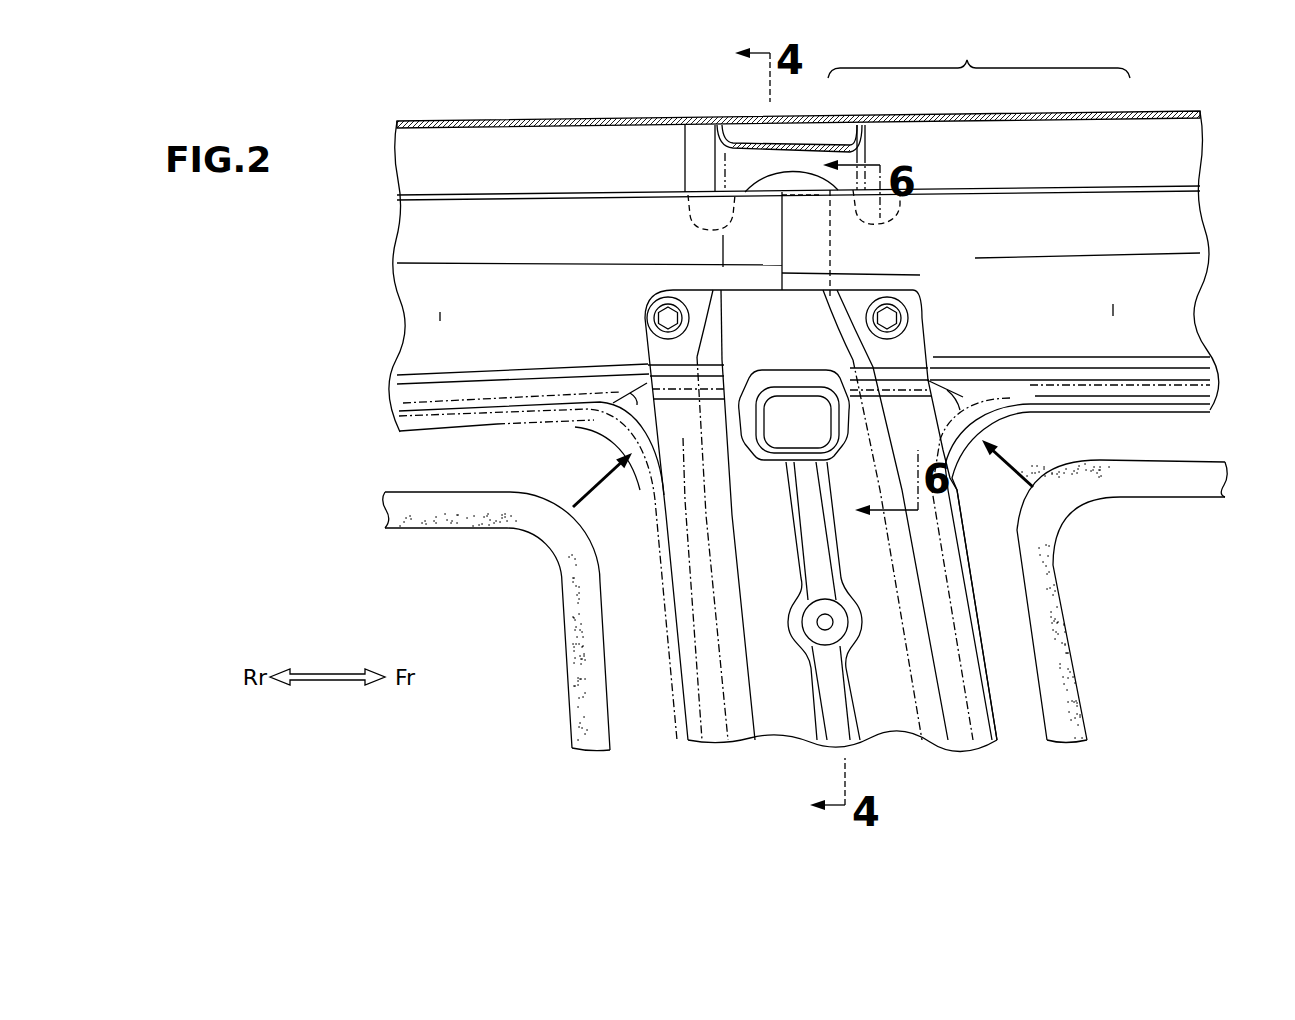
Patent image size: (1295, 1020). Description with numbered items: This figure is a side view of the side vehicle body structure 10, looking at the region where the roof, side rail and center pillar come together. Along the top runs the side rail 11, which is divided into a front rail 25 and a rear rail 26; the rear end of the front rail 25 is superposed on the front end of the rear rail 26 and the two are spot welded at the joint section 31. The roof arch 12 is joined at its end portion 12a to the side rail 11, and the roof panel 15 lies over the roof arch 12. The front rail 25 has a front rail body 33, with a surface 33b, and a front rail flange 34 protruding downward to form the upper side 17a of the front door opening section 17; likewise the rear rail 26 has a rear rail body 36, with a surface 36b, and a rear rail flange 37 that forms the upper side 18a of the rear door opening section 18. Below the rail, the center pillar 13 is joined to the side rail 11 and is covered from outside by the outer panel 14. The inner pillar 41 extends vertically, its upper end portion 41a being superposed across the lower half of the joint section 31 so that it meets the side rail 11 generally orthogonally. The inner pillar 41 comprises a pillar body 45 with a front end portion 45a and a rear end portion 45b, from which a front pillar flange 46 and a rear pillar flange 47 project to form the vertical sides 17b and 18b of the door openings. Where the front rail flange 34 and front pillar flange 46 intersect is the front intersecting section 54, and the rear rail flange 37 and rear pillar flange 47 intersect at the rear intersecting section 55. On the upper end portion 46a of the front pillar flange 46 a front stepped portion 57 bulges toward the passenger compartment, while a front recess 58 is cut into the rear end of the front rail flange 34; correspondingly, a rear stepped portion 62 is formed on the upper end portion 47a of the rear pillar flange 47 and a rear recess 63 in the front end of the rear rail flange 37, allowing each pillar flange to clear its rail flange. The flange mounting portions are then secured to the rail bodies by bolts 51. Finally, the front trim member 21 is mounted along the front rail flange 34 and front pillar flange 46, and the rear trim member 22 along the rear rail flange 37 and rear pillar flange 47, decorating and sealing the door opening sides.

The side vehicle body structure 10 is at (418, 108).
The side rail 11 is at (979, 55).
The roof arch 12 is at (885, 147).
The end portion of roof arch 12a is at (690, 215).
The center pillar 13 is at (675, 602).
The outer panel 14 is at (438, 388).
The roof panel 15 is at (600, 120).
The front door opening section 17 is at (1136, 612).
The upper side of front door opening section 17a is at (1150, 390).
The vertical side of front door opening section 17b is at (967, 620).
The rear door opening section 18 is at (456, 620).
The upper side of rear door opening section 18a is at (497, 400).
The vertical side of rear door opening section 18b is at (682, 570).
The front trim member 21 is at (1063, 683).
The rear trim member 22 is at (583, 718).
The front rail 25 is at (1013, 205).
The rear rail 26 is at (663, 212).
The joint section 31 is at (783, 228).
The front rail body 33 is at (1163, 275).
The surface of front rail body 33b is at (1113, 310).
The front rail flange 34 is at (1177, 387).
The rear rail body 36 is at (417, 287).
The surface of rear rail body 36b is at (437, 321).
The rear rail flange 37 is at (420, 414).
The inner pillar 41 is at (730, 613).
The upper end portion of inner pillar 41a is at (793, 327).
The pillar body 45 is at (887, 667).
The front end portion of pillar body 45a is at (907, 513).
The rear end portion of pillar body 45b is at (706, 517).
The front pillar flange 46 is at (933, 543).
The upper end portion of front pillar flange 46a is at (853, 353).
The rear pillar flange 47 is at (710, 663).
The upper end portion of rear pillar flange 47a is at (717, 337).
The bolt 51 is at (660, 316).
The front intersecting section 54 is at (924, 350).
The rear intersecting section 55 is at (660, 352).
The front stepped portion 57 is at (910, 405).
The front recess 58 is at (973, 422).
The rear stepped portion 62 is at (673, 390).
The rear recess 63 is at (620, 423).